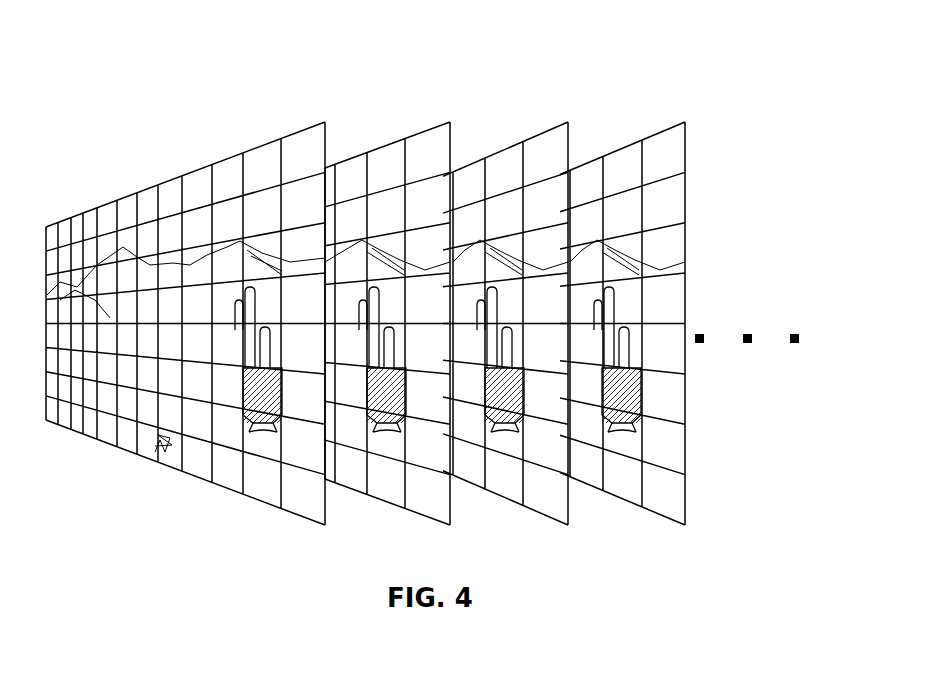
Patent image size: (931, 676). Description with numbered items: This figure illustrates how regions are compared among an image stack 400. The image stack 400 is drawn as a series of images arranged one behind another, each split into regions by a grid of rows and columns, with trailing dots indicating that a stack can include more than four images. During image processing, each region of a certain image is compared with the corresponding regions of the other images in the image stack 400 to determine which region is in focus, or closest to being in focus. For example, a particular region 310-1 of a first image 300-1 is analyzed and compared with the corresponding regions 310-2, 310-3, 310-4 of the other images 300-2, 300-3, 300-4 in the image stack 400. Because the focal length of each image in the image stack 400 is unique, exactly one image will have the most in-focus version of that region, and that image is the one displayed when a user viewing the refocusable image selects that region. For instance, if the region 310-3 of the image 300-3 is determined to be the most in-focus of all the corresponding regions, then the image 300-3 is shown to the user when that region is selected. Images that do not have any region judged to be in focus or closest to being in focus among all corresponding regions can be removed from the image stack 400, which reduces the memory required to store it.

The image stack 400 is at (49, 69).
The first image 300-1 is at (247, 151).
The second image 300-2 is at (386, 145).
The third image 300-3 is at (508, 148).
The fourth image 300-4 is at (622, 148).
The region of the first image 310-1 is at (244, 410).
The corresponding region of the second image 310-2 is at (371, 410).
The corresponding region of the third image 310-3 is at (492, 410).
The corresponding region of the fourth image 310-4 is at (607, 410).